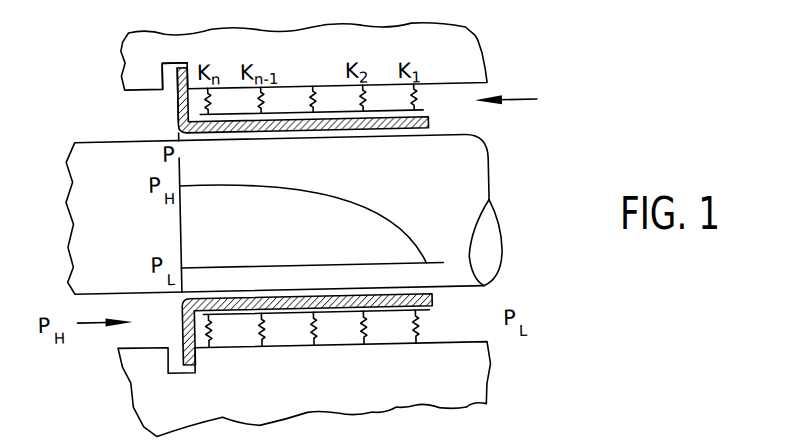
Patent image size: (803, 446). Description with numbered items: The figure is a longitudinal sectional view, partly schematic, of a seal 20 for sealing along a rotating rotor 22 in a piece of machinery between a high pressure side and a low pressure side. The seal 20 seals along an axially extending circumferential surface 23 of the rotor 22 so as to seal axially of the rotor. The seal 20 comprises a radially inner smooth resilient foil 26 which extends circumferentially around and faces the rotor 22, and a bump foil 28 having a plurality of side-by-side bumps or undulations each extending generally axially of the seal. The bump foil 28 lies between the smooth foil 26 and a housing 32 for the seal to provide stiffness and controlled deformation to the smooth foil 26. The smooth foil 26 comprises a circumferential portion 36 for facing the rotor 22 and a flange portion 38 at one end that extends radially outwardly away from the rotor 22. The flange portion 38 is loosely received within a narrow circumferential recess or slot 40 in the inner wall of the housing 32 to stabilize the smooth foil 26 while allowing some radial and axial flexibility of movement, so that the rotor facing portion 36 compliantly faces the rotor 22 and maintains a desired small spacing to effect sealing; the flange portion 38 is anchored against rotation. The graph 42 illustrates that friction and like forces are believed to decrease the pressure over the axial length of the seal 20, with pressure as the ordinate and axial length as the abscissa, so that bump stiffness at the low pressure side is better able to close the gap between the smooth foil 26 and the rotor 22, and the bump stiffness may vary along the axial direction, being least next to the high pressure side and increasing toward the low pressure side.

The seal 20 is at (527, 102).
The rotor 22 is at (433, 201).
The axially extending circumferential surface 23 is at (443, 142).
The smooth resilient foil 26 is at (318, 140).
The bump foil 28 is at (341, 316).
The housing 32 is at (310, 401).
The circumferential portion 36 is at (233, 144).
The flange portion 38 is at (182, 100).
The recess 40 is at (165, 62).
The pressure decrease graph 42 is at (300, 196).